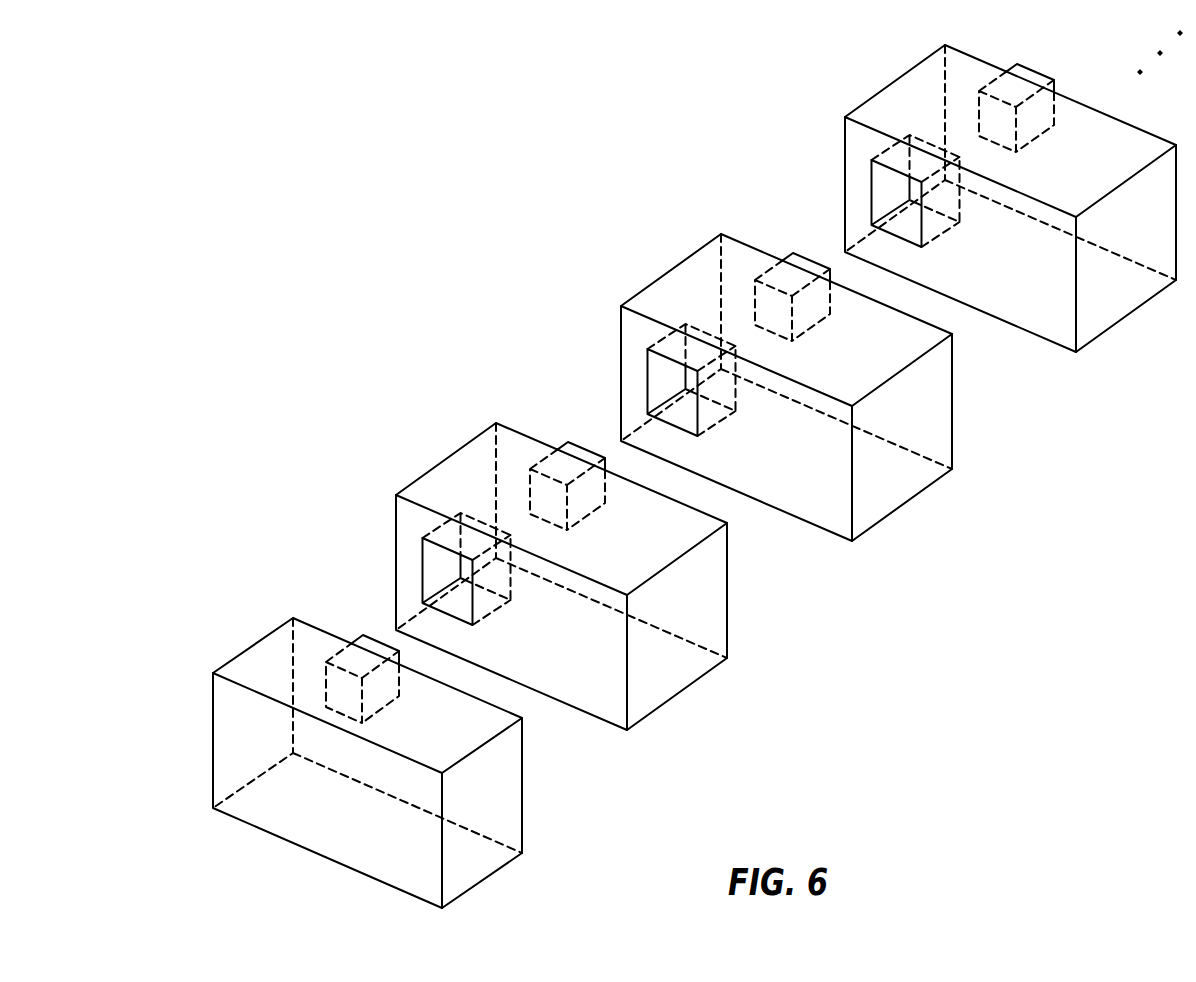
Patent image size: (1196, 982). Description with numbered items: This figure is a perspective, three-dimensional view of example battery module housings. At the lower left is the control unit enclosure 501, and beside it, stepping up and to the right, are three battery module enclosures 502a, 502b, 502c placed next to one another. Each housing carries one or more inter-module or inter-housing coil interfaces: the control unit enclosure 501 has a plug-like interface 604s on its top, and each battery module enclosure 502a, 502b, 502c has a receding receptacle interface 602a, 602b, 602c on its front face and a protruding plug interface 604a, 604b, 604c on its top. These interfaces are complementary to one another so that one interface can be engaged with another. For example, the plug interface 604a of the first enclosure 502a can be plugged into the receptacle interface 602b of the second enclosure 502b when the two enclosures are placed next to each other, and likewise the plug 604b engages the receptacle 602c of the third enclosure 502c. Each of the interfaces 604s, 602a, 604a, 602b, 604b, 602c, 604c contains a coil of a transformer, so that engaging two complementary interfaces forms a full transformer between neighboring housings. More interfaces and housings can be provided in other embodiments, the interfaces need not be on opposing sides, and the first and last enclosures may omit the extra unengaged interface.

The control unit enclosure 501 is at (200, 645).
The coil interface 604s is at (361, 630).
The battery module enclosure 502a is at (386, 478).
The receptacle interface 602a is at (411, 583).
The plug interface 604a is at (580, 438).
The battery module enclosure 502b is at (610, 288).
The receptacle interface 602b is at (636, 380).
The plug interface 604b is at (799, 240).
The battery module enclosure 502c is at (835, 99).
The receptacle interface 602c is at (860, 185).
The plug interface 604c is at (1023, 52).